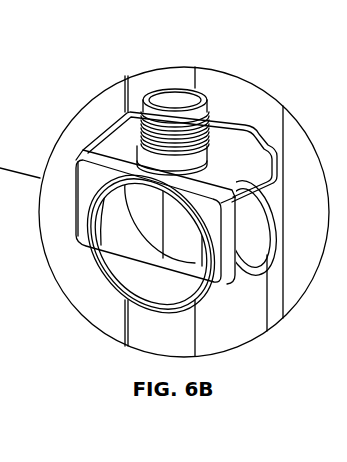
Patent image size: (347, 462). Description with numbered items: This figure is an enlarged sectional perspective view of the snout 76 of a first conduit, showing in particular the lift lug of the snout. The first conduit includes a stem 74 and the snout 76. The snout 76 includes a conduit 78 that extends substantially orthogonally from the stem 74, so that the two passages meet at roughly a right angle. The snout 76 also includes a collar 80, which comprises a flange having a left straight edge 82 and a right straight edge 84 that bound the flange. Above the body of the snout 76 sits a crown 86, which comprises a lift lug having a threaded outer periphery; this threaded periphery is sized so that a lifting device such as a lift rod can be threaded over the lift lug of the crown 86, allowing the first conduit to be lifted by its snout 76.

The stem 74 is at (243, 103).
The snout 76 is at (113, 296).
The conduit 78 is at (247, 246).
The collar 80 is at (73, 201).
The left straight edge 82 is at (236, 228).
The right straight edge 84 is at (77, 182).
The crown 86 is at (178, 97).